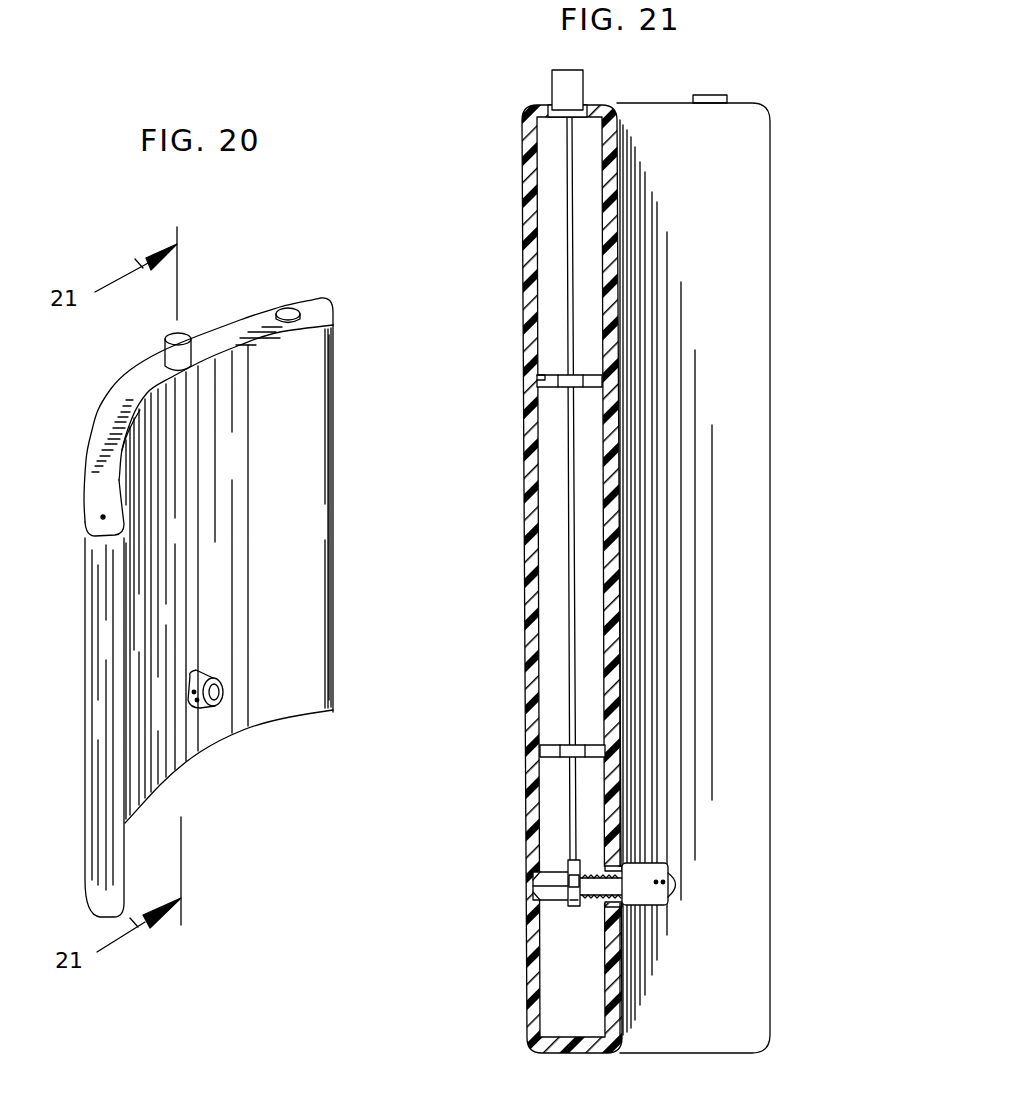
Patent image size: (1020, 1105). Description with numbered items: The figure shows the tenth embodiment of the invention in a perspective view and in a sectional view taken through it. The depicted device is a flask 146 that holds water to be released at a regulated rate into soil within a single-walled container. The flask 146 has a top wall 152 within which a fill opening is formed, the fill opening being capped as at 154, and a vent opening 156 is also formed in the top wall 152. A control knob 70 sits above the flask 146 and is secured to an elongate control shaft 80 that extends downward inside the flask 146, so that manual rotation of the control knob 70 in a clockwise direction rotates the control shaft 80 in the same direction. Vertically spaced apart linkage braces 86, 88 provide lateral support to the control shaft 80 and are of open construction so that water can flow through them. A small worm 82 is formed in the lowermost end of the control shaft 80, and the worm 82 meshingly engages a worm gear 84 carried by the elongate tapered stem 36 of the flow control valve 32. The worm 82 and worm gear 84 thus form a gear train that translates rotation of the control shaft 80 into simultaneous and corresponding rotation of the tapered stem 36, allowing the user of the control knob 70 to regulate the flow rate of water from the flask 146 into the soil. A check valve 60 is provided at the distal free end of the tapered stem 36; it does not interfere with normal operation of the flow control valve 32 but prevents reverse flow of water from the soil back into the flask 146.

In FIG. 20, the flask 146 is at (348, 370).
In FIG. 21, the flask 146 is at (800, 187).
In FIG. 20, the top wall 152 is at (122, 420).
In FIG. 20, the cap 154 is at (290, 310).
In FIG. 21, the cap 154 is at (705, 95).
In FIG. 20, the vent opening 156 is at (103, 517).
In FIG. 20, the control knob 70 is at (180, 350).
In FIG. 21, the control knob 70 is at (568, 70).
In FIG. 20, the check valve 60 is at (203, 682).
In FIG. 21, the check valve 60 is at (641, 870).
In FIG. 20, the flow control valve 32 is at (222, 696).
In FIG. 21, the flow control valve 32 is at (649, 904).
In FIG. 21, the control shaft 80 is at (568, 200).
In FIG. 21, the linkage brace 86 is at (548, 376).
In FIG. 21, the linkage brace 88 is at (548, 746).
In FIG. 21, the elongate tapered stem 36 is at (562, 866).
In FIG. 21, the worm 82 is at (535, 887).
In FIG. 21, the worm gear 84 is at (575, 907).